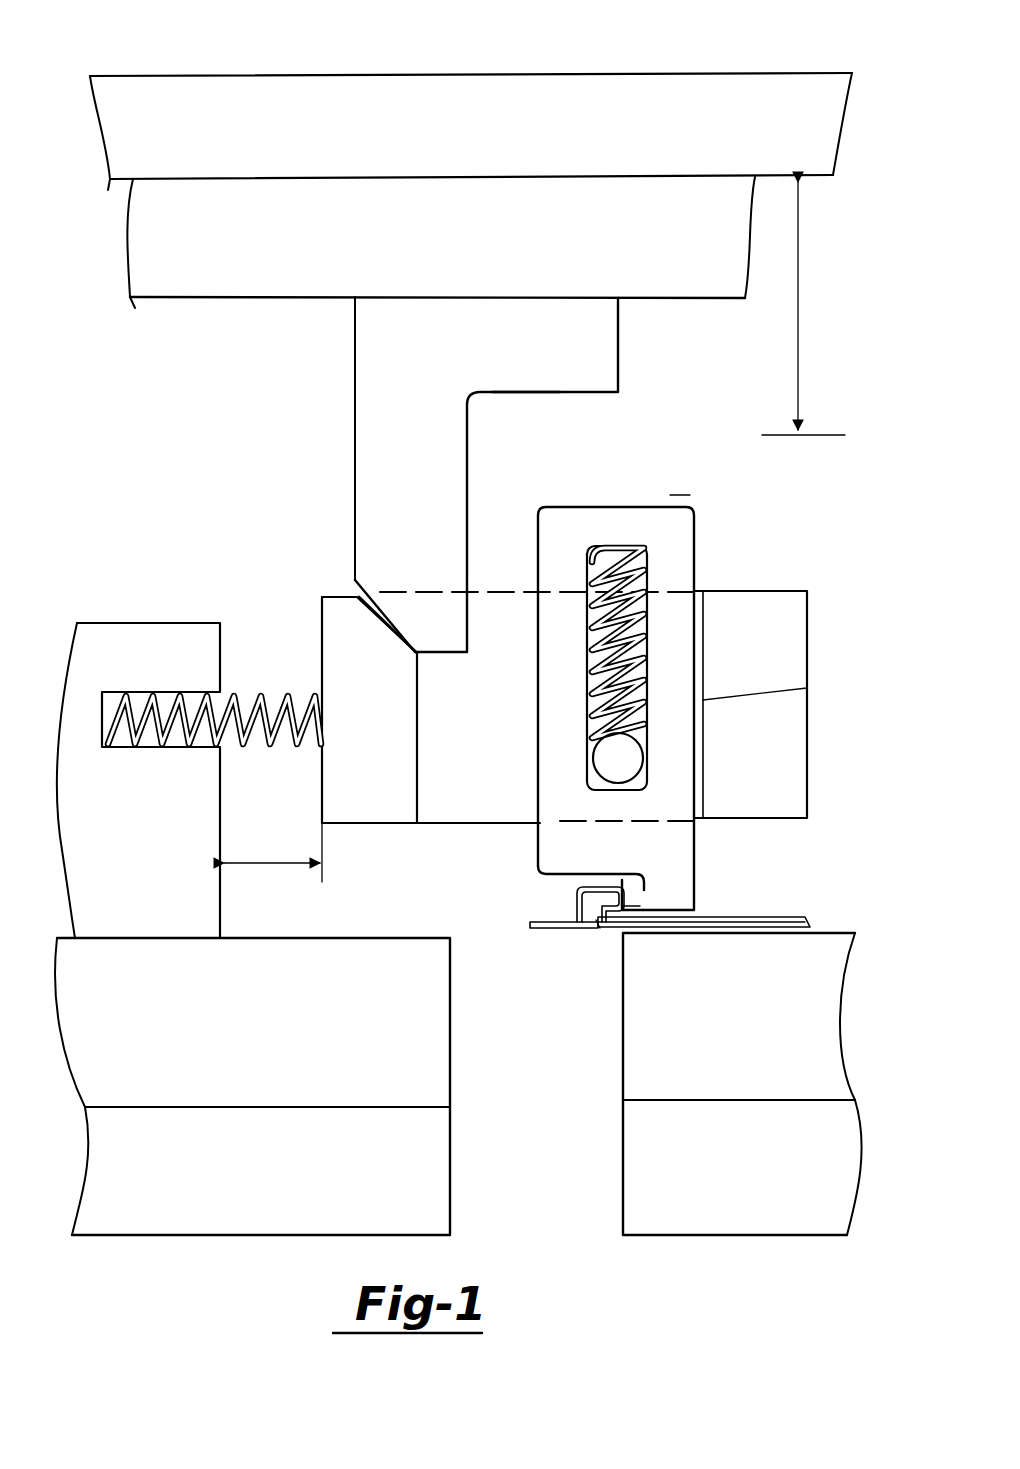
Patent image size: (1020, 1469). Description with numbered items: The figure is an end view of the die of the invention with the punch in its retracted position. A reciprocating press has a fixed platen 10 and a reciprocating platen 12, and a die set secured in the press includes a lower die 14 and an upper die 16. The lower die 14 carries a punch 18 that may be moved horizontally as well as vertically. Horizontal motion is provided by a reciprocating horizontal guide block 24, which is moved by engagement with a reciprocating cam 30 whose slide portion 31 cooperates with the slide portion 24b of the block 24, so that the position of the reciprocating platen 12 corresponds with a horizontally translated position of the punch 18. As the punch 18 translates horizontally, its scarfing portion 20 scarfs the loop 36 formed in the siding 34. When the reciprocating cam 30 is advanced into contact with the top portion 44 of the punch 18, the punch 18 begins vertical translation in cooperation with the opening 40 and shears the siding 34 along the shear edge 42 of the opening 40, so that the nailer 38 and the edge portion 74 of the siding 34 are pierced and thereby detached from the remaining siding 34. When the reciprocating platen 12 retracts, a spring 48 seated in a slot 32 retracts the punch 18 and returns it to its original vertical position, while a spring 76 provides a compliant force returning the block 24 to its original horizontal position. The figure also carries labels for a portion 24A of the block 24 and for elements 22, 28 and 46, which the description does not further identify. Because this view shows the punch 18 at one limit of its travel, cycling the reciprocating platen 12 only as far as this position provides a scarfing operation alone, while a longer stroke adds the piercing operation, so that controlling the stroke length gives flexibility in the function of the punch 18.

The fixed platen 10 is at (408, 1152).
The reciprocating platen 12 is at (495, 128).
The lower die 14 is at (257, 987).
The upper die 16 is at (677, 235).
The punch 18 is at (668, 494).
The scarfing portion 20 is at (622, 910).
The contact strip 22 is at (700, 906).
The horizontal guide block 24 is at (755, 608).
The carrier block portion 24A is at (705, 697).
The slide portion 24b is at (378, 623).
The ball 28 is at (608, 757).
The reciprocating cam 30 is at (397, 387).
The slide portion 31 is at (378, 603).
The slot 32 is at (637, 573).
The siding 34 is at (777, 916).
The loop 36 is at (578, 890).
The nailer 38 is at (531, 929).
The opening 40 is at (540, 1140).
The shear edge 42 is at (623, 940).
The top portion 44 is at (620, 505).
The shoulder 46 is at (528, 392).
The spring 48 is at (643, 570).
The edge portion 74 is at (598, 929).
The spring 76 is at (227, 695).